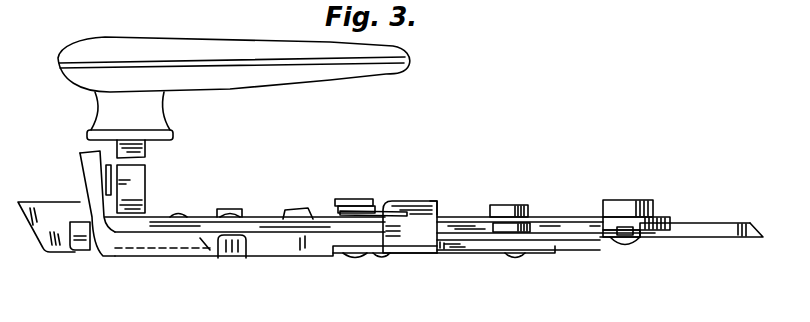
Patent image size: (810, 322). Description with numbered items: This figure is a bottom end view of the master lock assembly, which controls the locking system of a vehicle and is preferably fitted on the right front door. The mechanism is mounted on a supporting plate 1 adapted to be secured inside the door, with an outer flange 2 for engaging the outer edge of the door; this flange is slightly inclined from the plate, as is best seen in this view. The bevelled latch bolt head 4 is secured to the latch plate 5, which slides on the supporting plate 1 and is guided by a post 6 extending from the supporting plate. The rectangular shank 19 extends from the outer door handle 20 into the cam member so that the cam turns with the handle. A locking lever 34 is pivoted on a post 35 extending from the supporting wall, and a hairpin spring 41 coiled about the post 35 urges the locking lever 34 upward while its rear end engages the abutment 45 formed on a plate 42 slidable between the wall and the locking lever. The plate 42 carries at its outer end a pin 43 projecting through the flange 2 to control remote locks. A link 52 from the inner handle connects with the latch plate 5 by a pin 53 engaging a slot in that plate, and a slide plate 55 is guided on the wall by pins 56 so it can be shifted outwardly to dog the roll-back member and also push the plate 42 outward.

The supporting plate 1 is at (450, 253).
The outer flange 2 is at (80, 156).
The bevelled latch bolt head 4 is at (40, 208).
The latch plate 5 is at (688, 225).
The post 6 is at (505, 205).
The rectangular shank 19 is at (135, 198).
The outer door handle 20 is at (277, 72).
The locking lever 34 is at (245, 240).
The post 35 is at (367, 170).
The hairpin spring 41 is at (375, 212).
The plate 42 is at (313, 240).
The pin 43 is at (80, 237).
The abutment 45 is at (435, 205).
The link 52 is at (690, 228).
The pin 53 is at (655, 222).
The slide plate 55 is at (587, 217).
The pins 56 is at (550, 238).